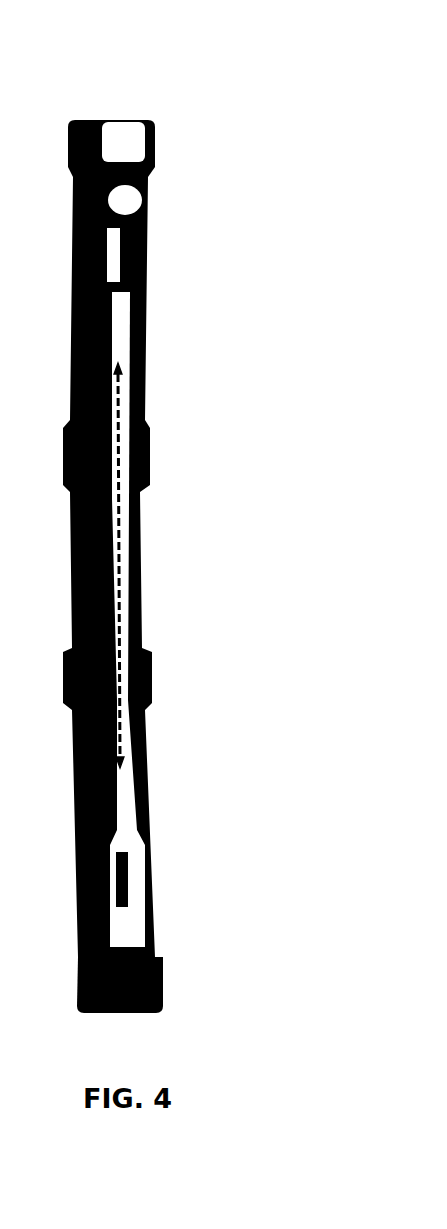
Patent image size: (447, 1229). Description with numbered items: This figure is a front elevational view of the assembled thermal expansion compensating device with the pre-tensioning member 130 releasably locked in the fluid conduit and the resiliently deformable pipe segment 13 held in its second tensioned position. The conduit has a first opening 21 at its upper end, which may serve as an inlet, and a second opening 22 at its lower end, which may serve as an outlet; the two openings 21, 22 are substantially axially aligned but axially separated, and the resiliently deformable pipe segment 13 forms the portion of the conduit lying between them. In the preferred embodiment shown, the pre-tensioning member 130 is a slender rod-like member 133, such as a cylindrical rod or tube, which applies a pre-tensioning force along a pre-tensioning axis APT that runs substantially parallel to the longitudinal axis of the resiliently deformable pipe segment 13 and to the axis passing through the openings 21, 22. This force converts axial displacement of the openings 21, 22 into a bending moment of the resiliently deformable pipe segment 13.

The first opening 21 is at (141, 98).
The second opening 22 is at (165, 1018).
The resiliently deformable pipe segment 13 is at (159, 580).
The rod-like member 133 is at (158, 313).
The pre-tensioning member 130 is at (138, 790).
The pre-tensioning axis APT is at (135, 492).